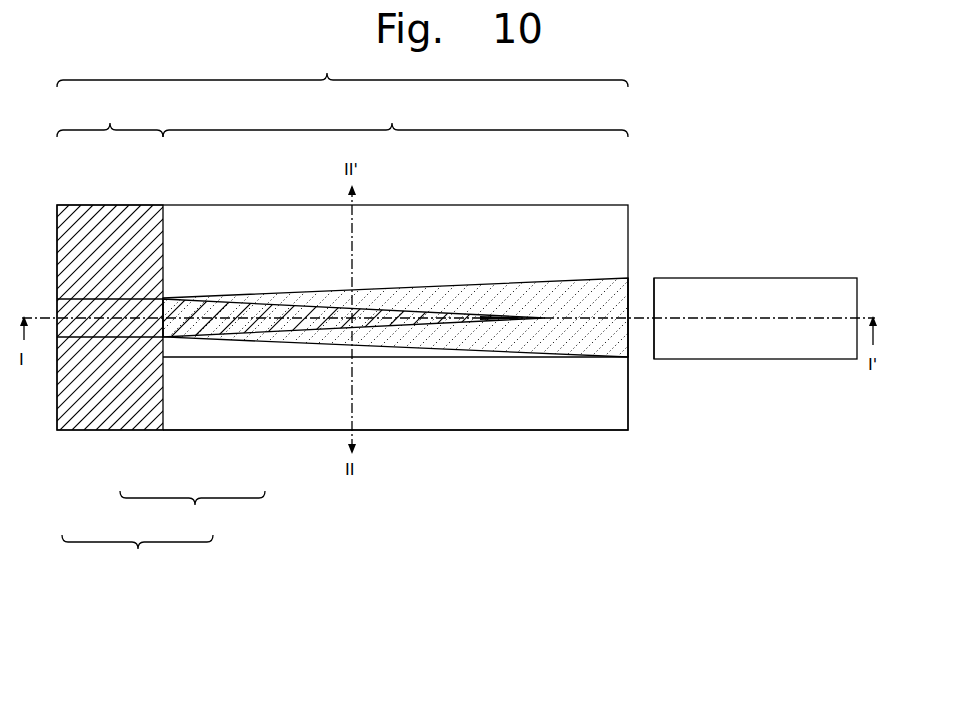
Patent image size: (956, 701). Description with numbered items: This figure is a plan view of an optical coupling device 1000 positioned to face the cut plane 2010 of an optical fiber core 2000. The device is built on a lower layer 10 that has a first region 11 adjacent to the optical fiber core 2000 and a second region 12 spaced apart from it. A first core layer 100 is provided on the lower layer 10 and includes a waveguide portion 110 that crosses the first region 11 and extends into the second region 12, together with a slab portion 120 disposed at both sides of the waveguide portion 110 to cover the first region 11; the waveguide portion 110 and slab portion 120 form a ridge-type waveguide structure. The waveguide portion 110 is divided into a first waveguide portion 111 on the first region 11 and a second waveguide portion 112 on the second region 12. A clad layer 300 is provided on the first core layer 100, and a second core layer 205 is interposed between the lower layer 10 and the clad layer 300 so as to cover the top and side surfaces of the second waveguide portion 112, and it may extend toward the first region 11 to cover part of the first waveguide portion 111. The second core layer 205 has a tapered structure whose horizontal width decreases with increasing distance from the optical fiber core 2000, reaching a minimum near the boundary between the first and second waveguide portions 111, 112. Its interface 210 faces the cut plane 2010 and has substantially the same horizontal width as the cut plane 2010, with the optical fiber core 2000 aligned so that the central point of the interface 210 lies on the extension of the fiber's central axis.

The optical coupling device 1000 is at (342, 67).
The first region 11 is at (110, 117).
The second region 12 is at (395, 117).
The lower layer 10 is at (522, 205).
The first core layer 100 is at (137, 555).
The waveguide portion 110 is at (192, 512).
The first waveguide portion 111 is at (140, 301).
The second waveguide portion 112 is at (240, 318).
The slab portion 120 is at (78, 417).
The second core layer 205 is at (575, 342).
The interface 210 is at (628, 288).
The clad layer 300 is at (453, 415).
The optical fiber core 2000 is at (760, 278).
The cut plane 2010 is at (654, 340).